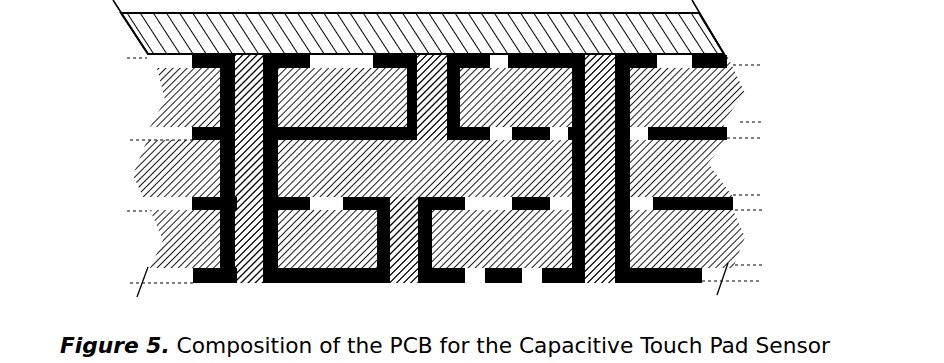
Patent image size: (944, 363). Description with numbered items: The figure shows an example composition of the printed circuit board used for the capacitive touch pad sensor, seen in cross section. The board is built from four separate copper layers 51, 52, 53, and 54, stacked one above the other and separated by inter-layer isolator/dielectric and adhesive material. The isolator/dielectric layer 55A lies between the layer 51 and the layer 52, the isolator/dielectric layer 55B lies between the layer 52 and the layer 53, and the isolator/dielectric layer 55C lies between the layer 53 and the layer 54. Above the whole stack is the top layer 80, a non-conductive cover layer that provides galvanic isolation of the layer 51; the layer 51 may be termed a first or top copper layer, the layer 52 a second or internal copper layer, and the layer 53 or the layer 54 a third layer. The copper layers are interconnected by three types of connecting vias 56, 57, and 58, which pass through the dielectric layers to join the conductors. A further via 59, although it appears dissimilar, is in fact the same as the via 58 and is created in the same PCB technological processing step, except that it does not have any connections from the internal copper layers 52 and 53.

The copper layer 51 is at (140, 60).
The copper layer 52 is at (140, 133).
The copper layer 53 is at (140, 203).
The copper layer 54 is at (140, 275).
The isolator/dielectric layer 55A is at (170, 105).
The isolator/dielectric layer 55B is at (150, 175).
The isolator/dielectric layer 55C is at (170, 245).
The connecting via 56 is at (430, 49).
The connecting via 57 is at (412, 295).
The connecting via 58 is at (258, 295).
The via 59 is at (588, 295).
The top layer 80 is at (712, 13).